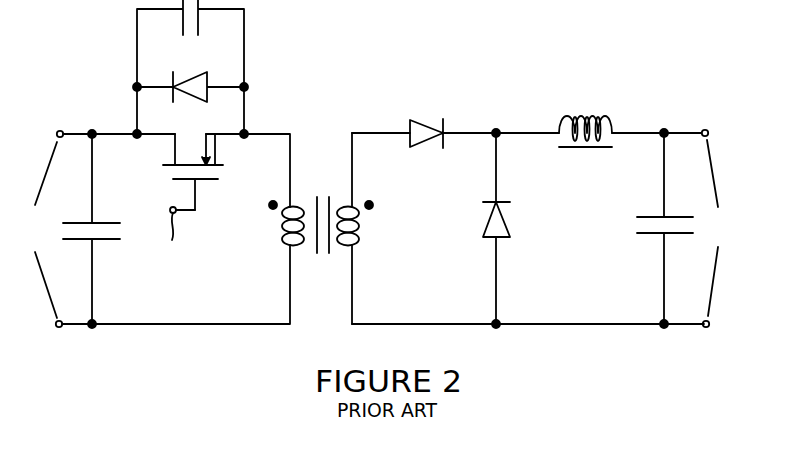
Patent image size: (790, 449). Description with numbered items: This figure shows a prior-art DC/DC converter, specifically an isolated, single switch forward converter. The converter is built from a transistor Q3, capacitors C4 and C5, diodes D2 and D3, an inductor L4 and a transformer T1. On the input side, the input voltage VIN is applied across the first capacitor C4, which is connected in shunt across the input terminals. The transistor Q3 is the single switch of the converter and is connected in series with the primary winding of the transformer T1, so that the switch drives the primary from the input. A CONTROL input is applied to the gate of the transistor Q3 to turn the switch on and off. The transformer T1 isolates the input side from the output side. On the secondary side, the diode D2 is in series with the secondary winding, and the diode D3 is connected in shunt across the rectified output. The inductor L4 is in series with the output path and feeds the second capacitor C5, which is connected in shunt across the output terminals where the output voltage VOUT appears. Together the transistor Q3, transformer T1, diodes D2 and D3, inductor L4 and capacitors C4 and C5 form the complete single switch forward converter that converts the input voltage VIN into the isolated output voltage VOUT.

The capacitor C4 is at (95, 229).
The transistor Q3 is at (209, 172).
The transformer T1 is at (313, 190).
The diode D2 is at (426, 146).
The diode D3 is at (513, 228).
The inductor L4 is at (585, 144).
The capacitor C5 is at (649, 228).
The input voltage terminals VIN is at (41, 230).
The output voltage terminals VOUT is at (729, 228).
The control input CONTROL is at (181, 237).